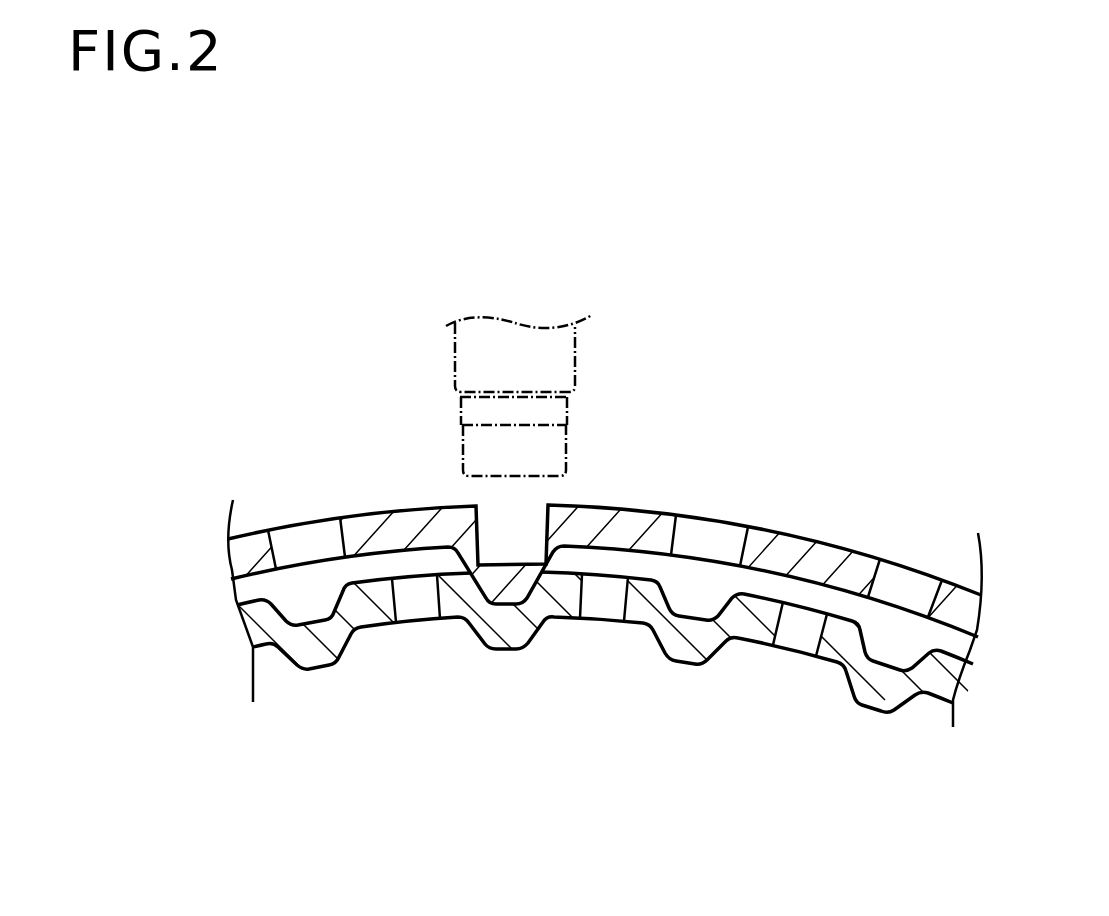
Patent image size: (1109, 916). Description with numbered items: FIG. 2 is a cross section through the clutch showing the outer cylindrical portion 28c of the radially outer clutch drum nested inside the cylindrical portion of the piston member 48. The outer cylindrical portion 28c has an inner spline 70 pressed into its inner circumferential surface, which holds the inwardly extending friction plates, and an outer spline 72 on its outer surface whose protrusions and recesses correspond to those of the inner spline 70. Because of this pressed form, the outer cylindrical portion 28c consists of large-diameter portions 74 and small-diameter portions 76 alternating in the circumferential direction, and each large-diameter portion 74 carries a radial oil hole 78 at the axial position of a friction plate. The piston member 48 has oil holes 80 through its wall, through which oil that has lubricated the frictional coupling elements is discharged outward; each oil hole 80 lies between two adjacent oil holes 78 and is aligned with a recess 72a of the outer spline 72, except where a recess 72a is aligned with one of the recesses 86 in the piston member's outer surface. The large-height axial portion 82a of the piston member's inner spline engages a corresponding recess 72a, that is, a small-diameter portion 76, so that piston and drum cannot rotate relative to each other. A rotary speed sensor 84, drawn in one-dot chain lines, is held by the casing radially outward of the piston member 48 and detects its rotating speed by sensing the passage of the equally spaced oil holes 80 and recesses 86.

The outer cylindrical portion 28c is at (764, 804).
The piston member 48 is at (808, 368).
The inner spline 70 is at (605, 646).
The outer spline 72 is at (604, 510).
The recesses of the outer spline 72a is at (605, 562).
The large-diameter portions 74 is at (621, 635).
The small-diameter portions 76 is at (508, 702).
The oil holes 78 is at (603, 659).
The oil holes 80 is at (593, 573).
The large-height axial portion 82a is at (581, 506).
The rotary speed sensor 84 is at (515, 355).
The recesses 86 is at (593, 581).